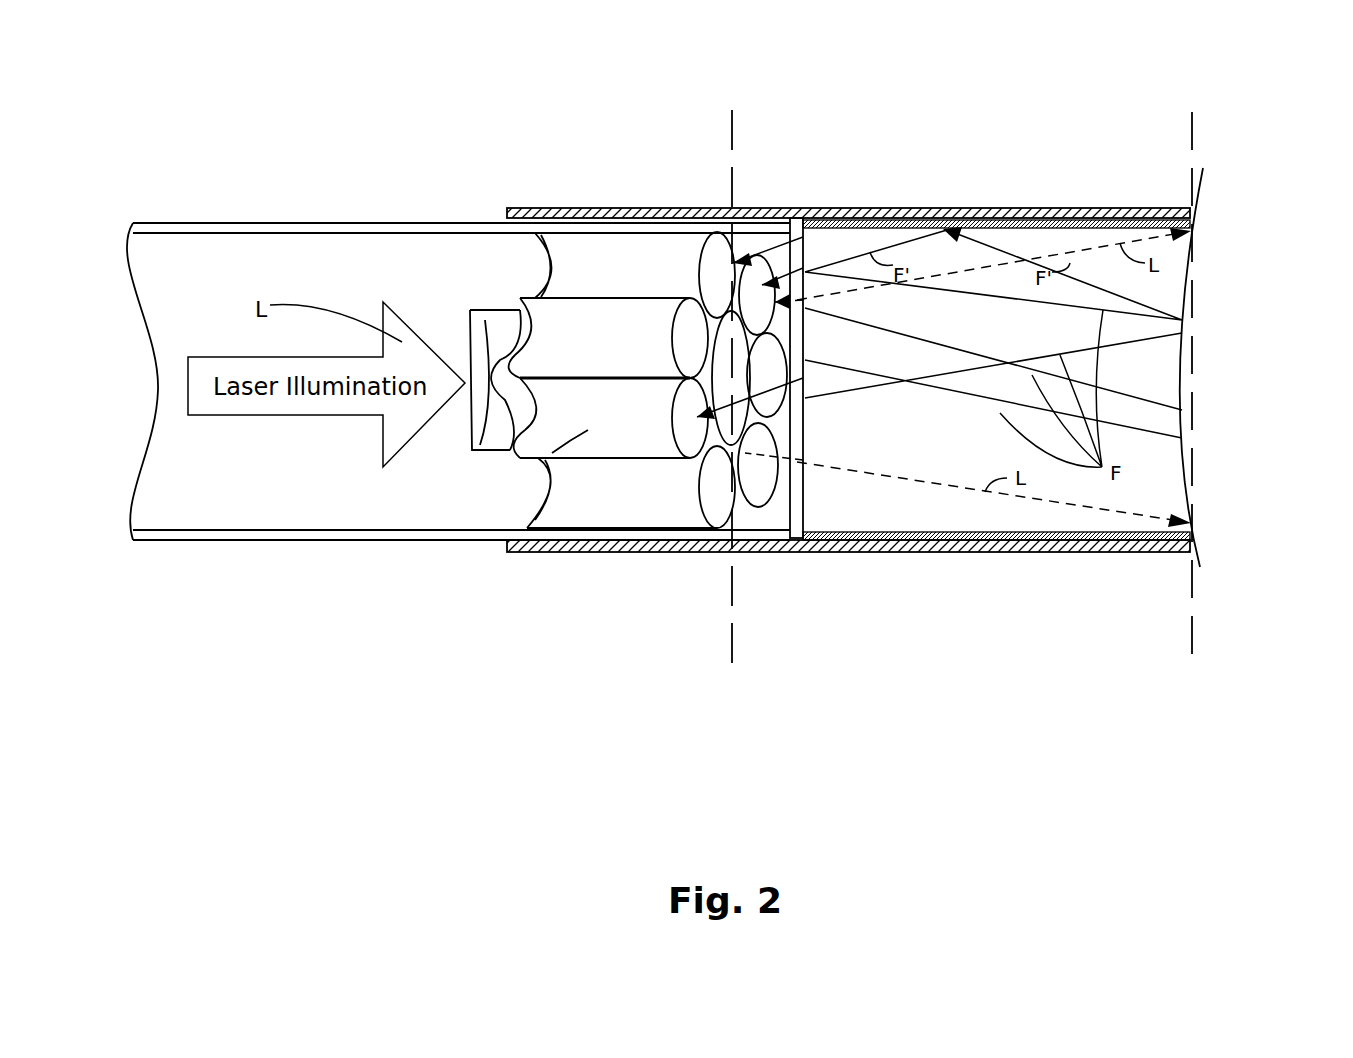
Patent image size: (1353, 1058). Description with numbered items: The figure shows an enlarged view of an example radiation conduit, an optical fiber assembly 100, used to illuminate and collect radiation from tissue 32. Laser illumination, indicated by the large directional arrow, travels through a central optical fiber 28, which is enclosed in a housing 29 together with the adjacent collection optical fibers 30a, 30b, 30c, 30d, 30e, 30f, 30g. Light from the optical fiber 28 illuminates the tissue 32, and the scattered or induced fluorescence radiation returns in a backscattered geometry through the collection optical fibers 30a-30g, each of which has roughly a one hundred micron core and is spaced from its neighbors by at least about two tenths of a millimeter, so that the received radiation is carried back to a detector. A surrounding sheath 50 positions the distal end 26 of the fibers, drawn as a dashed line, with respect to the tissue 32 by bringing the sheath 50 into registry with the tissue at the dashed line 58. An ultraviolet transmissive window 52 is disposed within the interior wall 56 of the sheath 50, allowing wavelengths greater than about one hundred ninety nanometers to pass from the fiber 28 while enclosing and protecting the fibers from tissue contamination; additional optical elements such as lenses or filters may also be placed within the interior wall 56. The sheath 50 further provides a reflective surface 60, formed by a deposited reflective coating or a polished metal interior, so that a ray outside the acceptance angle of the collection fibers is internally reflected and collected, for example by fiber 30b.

The optical fiber assembly 100 is at (343, 80).
The distal end 26 is at (728, 188).
The optical fiber 28 is at (490, 422).
The housing 29 is at (372, 225).
The collection optical fiber 30a is at (625, 273).
The collection optical fiber 30b is at (786, 242).
The collection optical fiber 30c is at (780, 392).
The collection optical fiber 30d is at (795, 465).
The collection optical fiber 30e is at (623, 488).
The collection optical fiber 30f is at (537, 463).
The collection optical fiber 30g is at (595, 337).
The tissue 32 is at (1190, 303).
The sheath 50 is at (877, 208).
The ultraviolet transmissive window 52 is at (798, 553).
The interior wall 56 is at (1013, 220).
The dashed line 58 is at (1190, 137).
The reflective surface 60 is at (1105, 218).